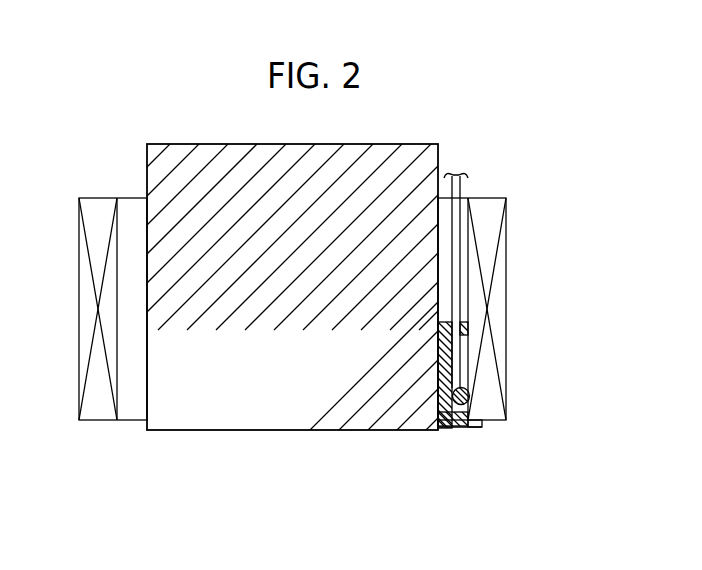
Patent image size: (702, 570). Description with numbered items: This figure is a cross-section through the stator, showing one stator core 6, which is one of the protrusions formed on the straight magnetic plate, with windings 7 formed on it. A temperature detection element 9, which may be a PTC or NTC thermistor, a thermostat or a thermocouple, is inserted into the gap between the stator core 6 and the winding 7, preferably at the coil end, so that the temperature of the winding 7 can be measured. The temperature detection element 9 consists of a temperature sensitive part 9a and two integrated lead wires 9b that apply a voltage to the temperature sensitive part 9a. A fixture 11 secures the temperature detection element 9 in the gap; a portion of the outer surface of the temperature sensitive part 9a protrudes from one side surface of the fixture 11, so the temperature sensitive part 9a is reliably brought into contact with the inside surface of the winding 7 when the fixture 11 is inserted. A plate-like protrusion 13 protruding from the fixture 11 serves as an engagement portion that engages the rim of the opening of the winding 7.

The stator core 6 is at (203, 430).
The winding 7 is at (495, 312).
The temperature detection element 9 is at (461, 371).
The temperature sensitive part 9a is at (469, 397).
The lead wire 9b is at (457, 188).
The fixture 11 is at (448, 427).
The protrusion 13 is at (475, 427).